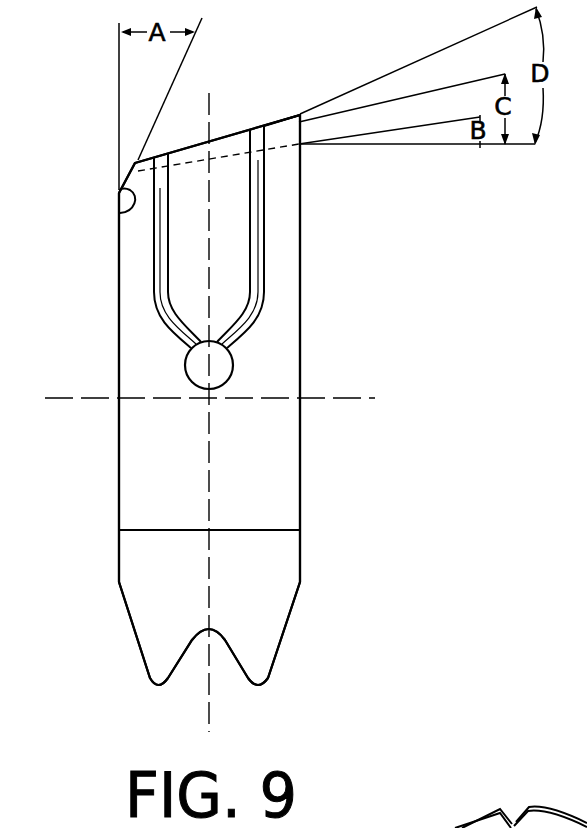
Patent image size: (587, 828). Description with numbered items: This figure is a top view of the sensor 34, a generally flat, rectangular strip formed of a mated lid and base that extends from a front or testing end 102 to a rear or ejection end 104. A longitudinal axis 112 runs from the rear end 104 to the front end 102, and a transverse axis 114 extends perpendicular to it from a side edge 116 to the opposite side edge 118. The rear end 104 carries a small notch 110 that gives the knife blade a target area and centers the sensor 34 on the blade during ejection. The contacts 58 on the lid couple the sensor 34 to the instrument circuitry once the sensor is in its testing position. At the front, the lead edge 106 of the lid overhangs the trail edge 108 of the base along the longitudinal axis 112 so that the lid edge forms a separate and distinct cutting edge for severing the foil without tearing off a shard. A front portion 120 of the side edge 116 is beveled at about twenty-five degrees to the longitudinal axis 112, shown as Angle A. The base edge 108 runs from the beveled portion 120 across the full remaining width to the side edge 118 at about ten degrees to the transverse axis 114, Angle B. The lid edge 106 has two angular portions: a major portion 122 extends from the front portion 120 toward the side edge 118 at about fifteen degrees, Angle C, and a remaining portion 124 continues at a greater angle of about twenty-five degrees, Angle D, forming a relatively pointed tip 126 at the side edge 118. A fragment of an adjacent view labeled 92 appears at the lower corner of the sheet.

The sensor 34 is at (388, 490).
The contacts 58 is at (166, 268).
The front or testing end 102 is at (233, 106).
The rear or ejection end 104 is at (152, 698).
The front or lead edge of the lid 106 is at (237, 134).
The front or trail edge of the base 108 is at (273, 150).
The notch 110 is at (240, 666).
The longitudinal axis 112 is at (208, 722).
The transverse axis 114 is at (353, 399).
The side edge 116 is at (119, 308).
The side edge 118 is at (300, 322).
The front portion of the side edge 120 is at (120, 213).
The major portion of the front lid edge 122 is at (179, 153).
The remaining portion of the front lid edge 124 is at (300, 112).
The pointed tip 126 is at (306, 100).
The adjacent figure element 92 is at (508, 822).